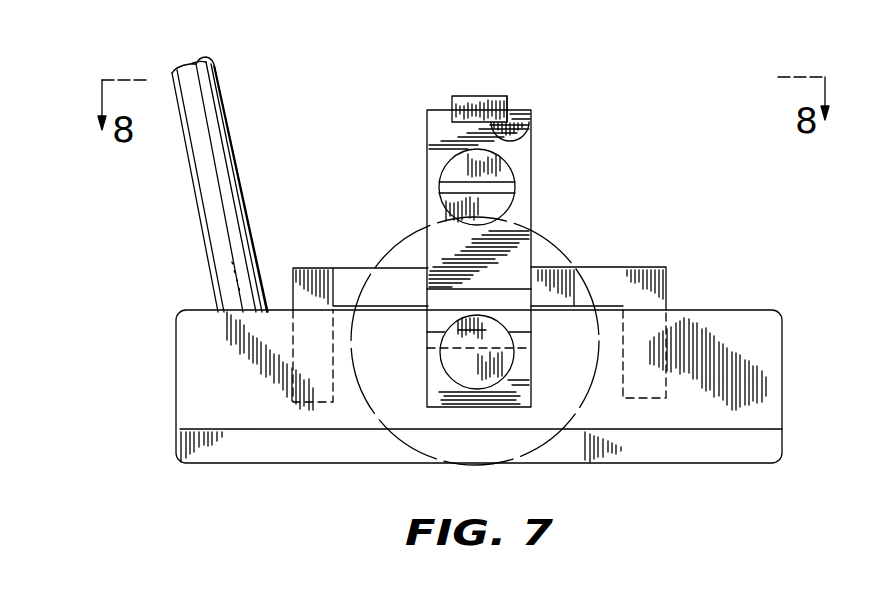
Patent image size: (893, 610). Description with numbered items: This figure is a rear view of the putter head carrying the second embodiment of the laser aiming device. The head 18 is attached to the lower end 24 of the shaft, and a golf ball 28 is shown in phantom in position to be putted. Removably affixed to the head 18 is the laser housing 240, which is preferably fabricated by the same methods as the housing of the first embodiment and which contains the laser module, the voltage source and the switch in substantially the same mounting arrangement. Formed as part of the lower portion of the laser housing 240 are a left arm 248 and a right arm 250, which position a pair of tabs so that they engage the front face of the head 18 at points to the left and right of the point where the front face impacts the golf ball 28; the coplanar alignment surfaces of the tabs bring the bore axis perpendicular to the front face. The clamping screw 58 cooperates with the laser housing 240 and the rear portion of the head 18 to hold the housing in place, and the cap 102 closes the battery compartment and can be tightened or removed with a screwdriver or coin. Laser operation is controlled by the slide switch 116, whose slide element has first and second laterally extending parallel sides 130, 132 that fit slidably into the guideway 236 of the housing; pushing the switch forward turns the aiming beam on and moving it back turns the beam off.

The head 18 is at (176, 366).
The lower end of the shaft 24 is at (183, 80).
The golf ball 28 is at (422, 230).
The clamping screw 58 is at (455, 385).
The cap 102 is at (512, 160).
The slide switch 116 is at (478, 42).
The first laterally extending parallel side 130 is at (508, 98).
The second laterally extending parallel side 132 is at (452, 108).
The guideway 236 is at (528, 130).
The laser housing 240 is at (427, 166).
The left arm 248 is at (602, 285).
The right arm 250 is at (348, 283).